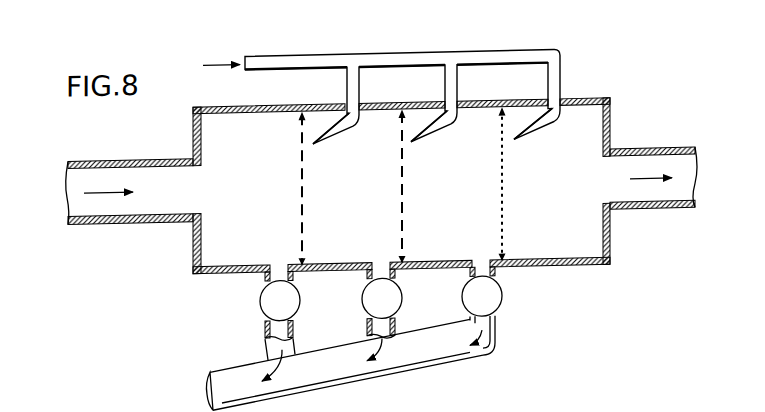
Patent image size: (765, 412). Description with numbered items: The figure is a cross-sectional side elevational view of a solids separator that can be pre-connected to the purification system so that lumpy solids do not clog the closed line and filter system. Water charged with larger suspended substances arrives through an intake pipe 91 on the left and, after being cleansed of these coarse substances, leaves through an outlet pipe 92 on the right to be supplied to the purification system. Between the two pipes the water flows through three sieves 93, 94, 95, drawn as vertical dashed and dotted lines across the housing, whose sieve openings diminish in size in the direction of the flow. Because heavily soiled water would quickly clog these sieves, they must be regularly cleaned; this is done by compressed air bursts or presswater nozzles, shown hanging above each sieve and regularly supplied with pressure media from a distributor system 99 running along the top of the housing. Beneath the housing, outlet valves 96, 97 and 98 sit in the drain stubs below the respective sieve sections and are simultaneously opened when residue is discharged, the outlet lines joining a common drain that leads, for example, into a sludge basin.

The intake pipe 91 is at (145, 169).
The outlet pipe 92 is at (640, 163).
The first sieve 93 is at (300, 146).
The second sieve 94 is at (402, 140).
The third sieve 95 is at (500, 130).
The first outlet valve 96 is at (258, 297).
The second outlet valve 97 is at (362, 299).
The third outlet valve 98 is at (503, 298).
The distributor system 99 is at (320, 62).